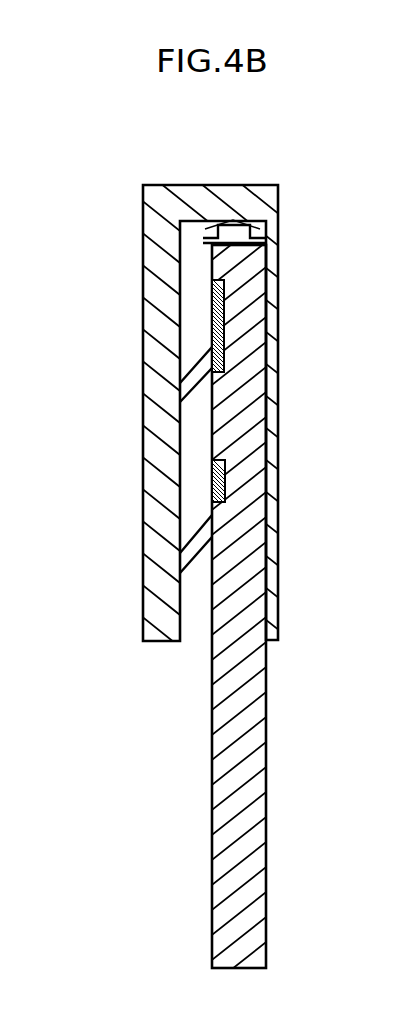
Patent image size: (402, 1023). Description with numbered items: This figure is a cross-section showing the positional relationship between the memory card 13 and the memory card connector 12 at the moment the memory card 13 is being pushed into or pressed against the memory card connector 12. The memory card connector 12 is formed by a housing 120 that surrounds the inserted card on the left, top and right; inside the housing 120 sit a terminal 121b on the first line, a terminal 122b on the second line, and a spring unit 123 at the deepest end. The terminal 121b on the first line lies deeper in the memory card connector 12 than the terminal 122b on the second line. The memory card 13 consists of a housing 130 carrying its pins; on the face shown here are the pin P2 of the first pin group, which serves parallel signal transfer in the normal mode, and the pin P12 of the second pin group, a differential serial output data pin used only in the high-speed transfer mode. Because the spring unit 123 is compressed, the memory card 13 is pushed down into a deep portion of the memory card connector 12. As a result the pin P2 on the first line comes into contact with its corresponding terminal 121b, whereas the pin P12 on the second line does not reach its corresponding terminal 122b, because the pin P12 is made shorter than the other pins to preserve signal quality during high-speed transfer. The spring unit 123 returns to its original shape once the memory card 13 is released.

The memory card connector 12 is at (197, 431).
The housing 120 is at (278, 198).
The terminal on the first line 121b is at (192, 362).
The terminal on the second line 122b is at (192, 537).
The spring unit 123 is at (266, 237).
The memory card 13 is at (251, 586).
The housing 130 is at (267, 895).
The pin P2 is at (225, 300).
The pin P12 is at (225, 470).